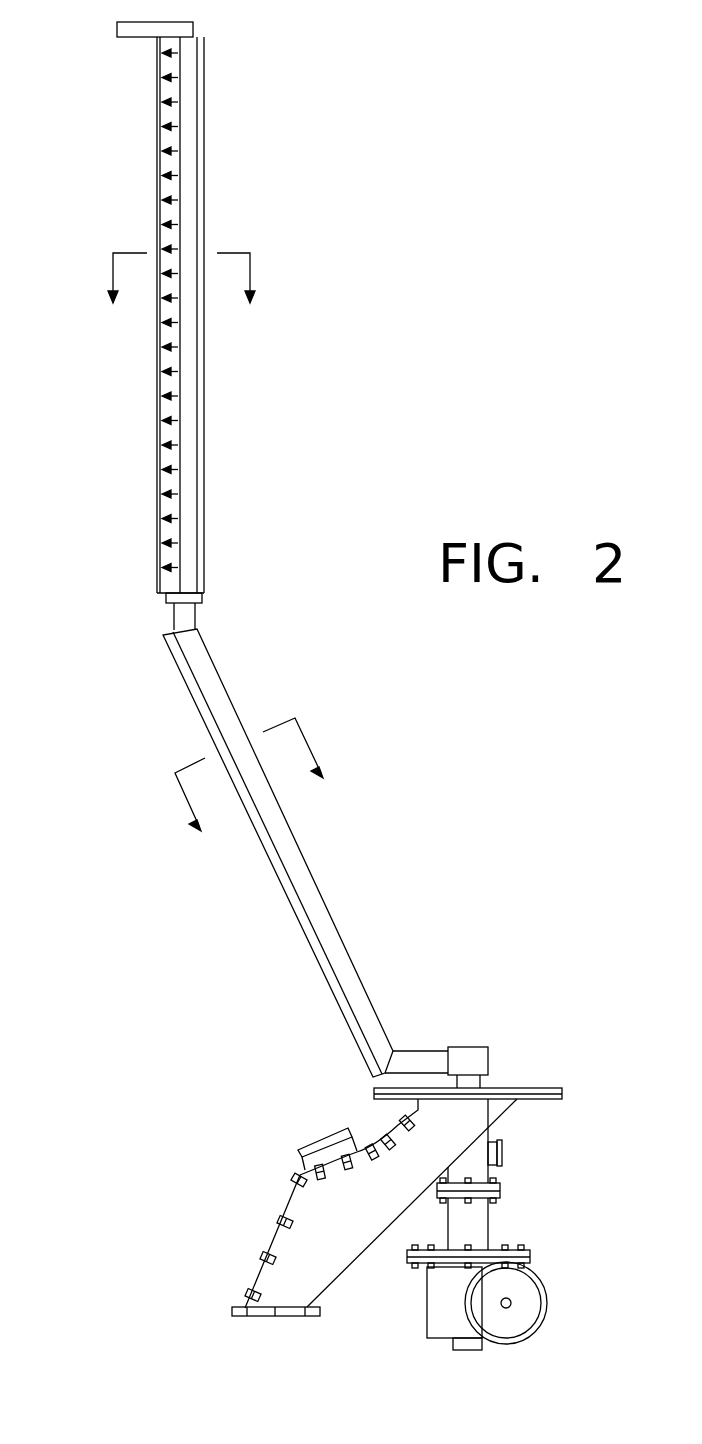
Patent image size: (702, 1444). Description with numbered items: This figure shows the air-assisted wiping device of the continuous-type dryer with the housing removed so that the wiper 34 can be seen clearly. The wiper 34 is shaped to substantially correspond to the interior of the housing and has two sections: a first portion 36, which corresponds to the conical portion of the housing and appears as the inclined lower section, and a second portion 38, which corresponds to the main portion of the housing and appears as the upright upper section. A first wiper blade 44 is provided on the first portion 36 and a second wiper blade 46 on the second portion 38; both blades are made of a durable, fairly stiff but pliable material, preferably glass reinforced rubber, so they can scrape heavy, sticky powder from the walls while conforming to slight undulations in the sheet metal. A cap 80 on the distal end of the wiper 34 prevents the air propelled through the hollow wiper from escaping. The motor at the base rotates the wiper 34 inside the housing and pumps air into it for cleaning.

The wiper 34 is at (356, 405).
The first portion 36 is at (328, 906).
The second portion 38 is at (205, 132).
The first wiper blade 44 is at (333, 978).
The second wiper blade 46 is at (163, 433).
The cap 80 is at (153, 22).